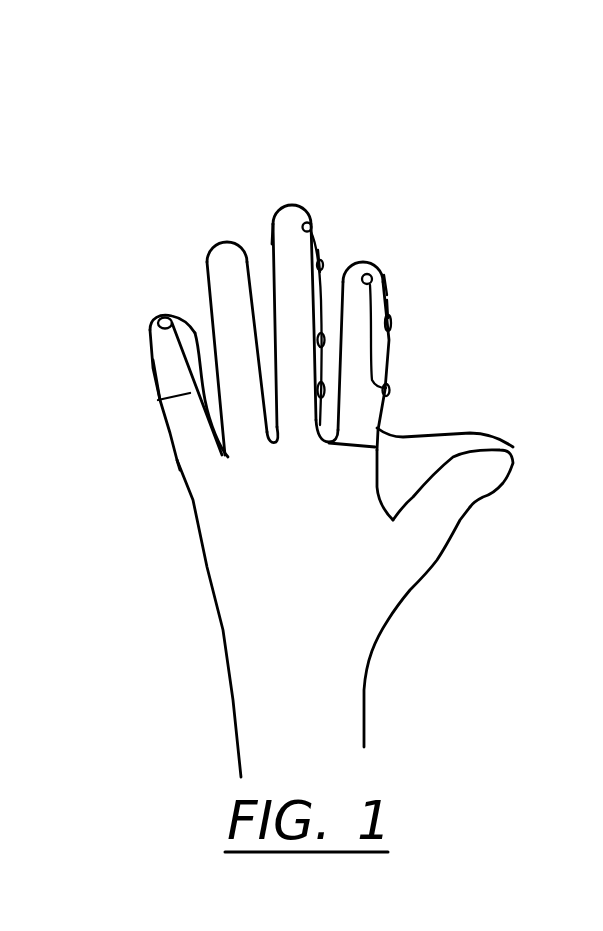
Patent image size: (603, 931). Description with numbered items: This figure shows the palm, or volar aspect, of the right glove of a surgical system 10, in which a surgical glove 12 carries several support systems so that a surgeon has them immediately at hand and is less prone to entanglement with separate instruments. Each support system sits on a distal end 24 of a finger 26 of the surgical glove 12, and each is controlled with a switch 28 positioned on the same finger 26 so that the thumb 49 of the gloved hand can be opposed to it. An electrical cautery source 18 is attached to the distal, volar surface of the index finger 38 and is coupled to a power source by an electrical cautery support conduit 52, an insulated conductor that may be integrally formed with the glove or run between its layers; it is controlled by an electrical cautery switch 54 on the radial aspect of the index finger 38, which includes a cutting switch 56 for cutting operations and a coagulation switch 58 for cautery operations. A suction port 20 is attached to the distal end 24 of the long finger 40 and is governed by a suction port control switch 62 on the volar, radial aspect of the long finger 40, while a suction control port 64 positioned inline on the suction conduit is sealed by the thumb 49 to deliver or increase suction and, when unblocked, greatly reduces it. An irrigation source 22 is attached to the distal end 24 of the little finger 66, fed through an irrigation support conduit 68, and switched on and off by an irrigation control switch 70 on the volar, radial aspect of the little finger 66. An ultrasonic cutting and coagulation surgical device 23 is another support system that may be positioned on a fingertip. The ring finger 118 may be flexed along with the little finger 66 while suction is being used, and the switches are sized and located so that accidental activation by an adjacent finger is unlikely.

The surgical system 10 is at (517, 188).
The surgical glove 12 is at (304, 205).
The electrical cautery source 18 is at (383, 273).
The suction port 20 is at (311, 227).
The irrigation source 22 is at (158, 320).
The ultrasonic cutting and coagulation surgical device 23 is at (383, 292).
The distal end 24 is at (274, 216).
The finger 26 is at (272, 244).
The switch 28 is at (420, 424).
The index finger 38 is at (389, 358).
The long finger 40 is at (311, 212).
The thumb 49 is at (473, 503).
The electrical cautery support conduit 52 is at (389, 309).
The electrical cautery switch 54 is at (430, 393).
The cutting switch 56 is at (391, 331).
The coagulation switch 58 is at (513, 447).
The suction port control switch 62 is at (382, 264).
The suction control port 64 is at (319, 262).
The little finger 66 is at (153, 360).
The irrigation support conduit 68 is at (160, 400).
The irrigation control switch 70 is at (194, 330).
The ring finger 118 is at (227, 307).